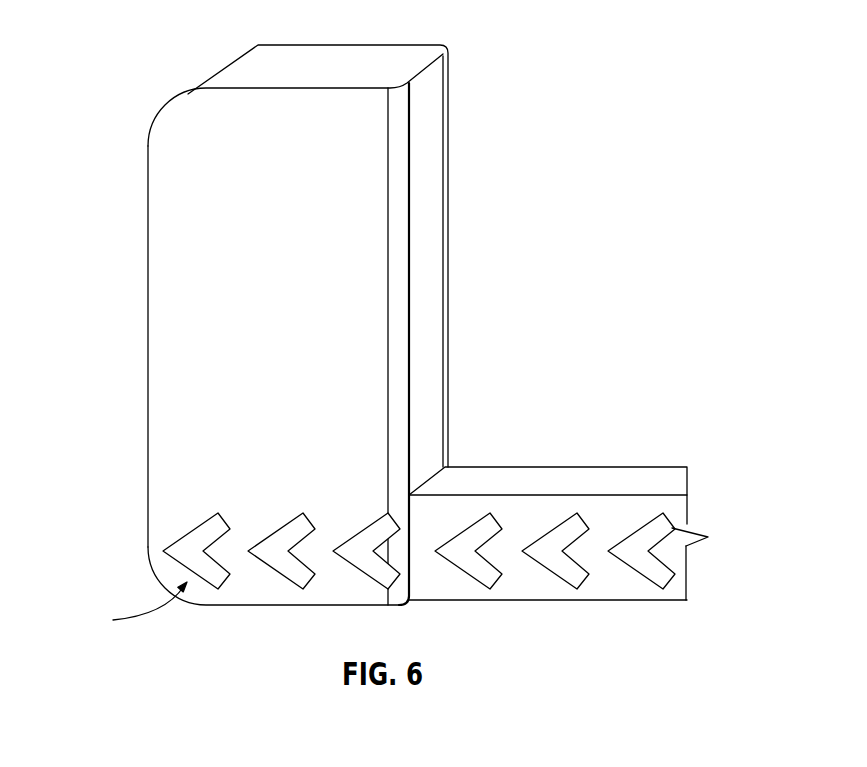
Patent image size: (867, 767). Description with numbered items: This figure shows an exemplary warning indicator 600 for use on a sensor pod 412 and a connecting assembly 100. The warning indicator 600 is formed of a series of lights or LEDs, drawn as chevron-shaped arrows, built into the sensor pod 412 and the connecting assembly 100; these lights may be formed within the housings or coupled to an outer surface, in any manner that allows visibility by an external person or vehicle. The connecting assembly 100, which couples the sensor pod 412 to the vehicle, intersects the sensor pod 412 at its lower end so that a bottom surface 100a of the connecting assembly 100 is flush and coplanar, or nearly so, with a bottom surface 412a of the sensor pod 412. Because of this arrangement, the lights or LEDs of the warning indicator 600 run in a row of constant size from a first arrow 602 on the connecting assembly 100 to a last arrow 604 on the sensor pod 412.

The sensor pod 412 is at (260, 352).
The bottom surface of the sensor pod 412a is at (270, 609).
The connecting assembly 100 is at (584, 536).
The bottom surface of the connecting assembly 100a is at (532, 592).
The warning indicator 600 is at (127, 610).
The first arrow 602 is at (673, 525).
The last arrow 604 is at (197, 530).